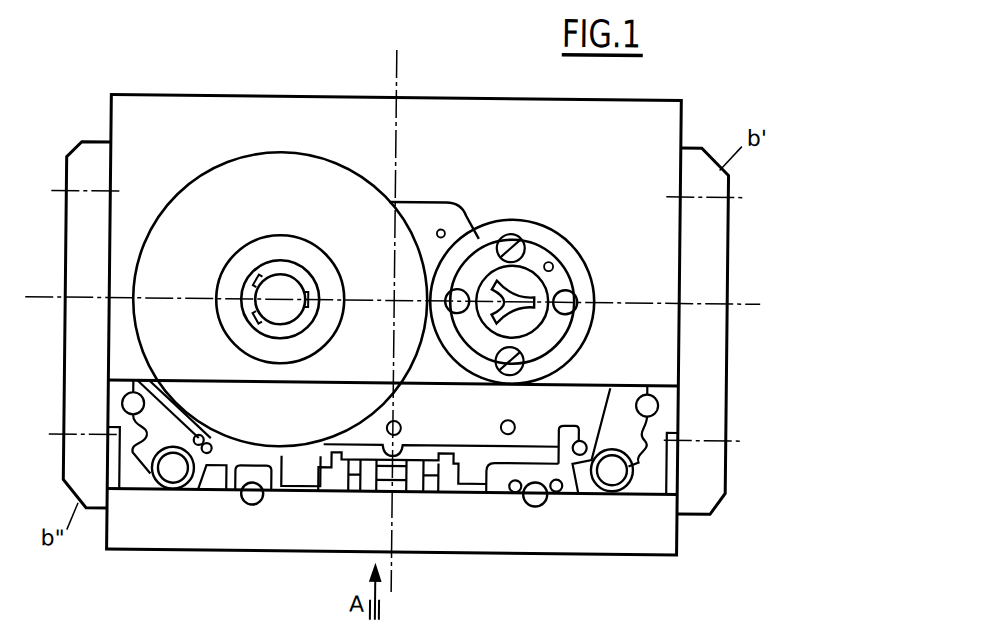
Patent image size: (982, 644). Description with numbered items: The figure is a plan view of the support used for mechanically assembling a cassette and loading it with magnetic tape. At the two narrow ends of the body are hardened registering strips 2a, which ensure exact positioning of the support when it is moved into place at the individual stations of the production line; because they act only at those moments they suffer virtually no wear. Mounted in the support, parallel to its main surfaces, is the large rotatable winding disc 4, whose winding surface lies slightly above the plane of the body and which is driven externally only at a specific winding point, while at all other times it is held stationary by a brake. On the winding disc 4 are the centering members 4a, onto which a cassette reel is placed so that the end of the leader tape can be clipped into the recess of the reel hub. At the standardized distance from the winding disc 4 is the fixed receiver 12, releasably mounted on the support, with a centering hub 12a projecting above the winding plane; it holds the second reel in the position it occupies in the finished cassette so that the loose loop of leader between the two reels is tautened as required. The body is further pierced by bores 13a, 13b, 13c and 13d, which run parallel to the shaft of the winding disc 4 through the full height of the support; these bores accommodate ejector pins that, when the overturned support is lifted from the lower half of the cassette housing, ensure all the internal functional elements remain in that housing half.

The registering strips 2a is at (81, 146).
The rotatable winding disc 4 is at (240, 170).
The centering members 4a is at (262, 279).
The fixed receiver 12 is at (532, 252).
The centering hub 12a is at (529, 290).
The bore 13a is at (175, 474).
The bore 13b is at (254, 499).
The bore 13c is at (150, 402).
The bore 13d is at (455, 290).